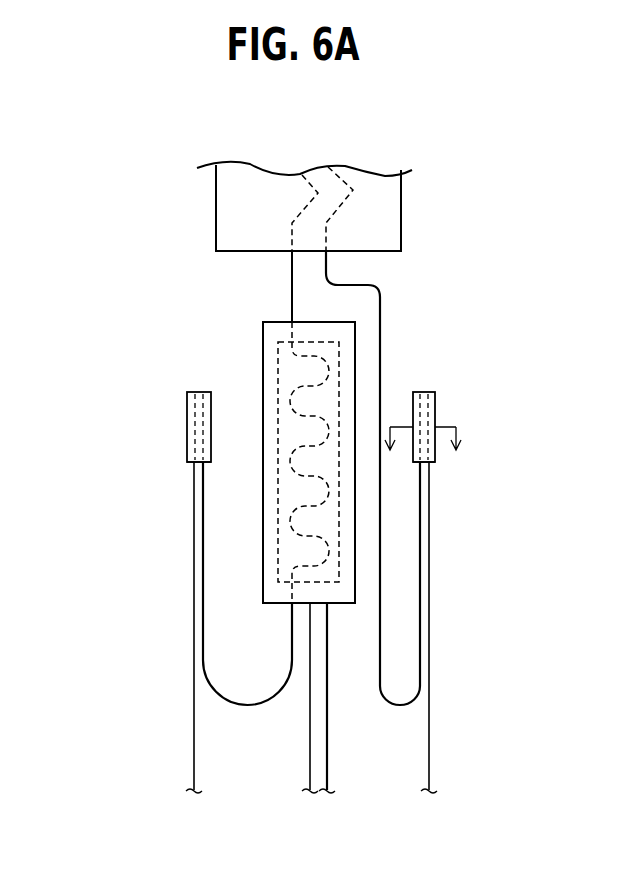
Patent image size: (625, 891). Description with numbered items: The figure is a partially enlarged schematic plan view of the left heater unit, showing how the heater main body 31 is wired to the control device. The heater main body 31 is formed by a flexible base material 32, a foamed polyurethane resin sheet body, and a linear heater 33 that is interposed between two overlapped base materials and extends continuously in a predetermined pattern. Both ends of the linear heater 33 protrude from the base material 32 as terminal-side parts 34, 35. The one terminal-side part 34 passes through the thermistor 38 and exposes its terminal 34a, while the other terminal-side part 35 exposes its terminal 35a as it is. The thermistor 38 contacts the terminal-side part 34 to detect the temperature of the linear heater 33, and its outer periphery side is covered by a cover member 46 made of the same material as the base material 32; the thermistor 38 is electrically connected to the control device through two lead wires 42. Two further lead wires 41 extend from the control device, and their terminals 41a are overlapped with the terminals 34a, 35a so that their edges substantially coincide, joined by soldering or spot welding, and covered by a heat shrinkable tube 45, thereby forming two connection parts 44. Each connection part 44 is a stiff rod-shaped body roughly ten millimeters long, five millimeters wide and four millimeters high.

The heater main body 31 is at (410, 192).
The base material 32 is at (383, 234).
The linear heater 33 is at (347, 187).
The terminal-side part 34 is at (292, 288).
The terminal-side part 35 is at (380, 326).
The terminal 34a is at (205, 424).
The terminal 35a is at (418, 427).
The thermistor 38 is at (272, 555).
The lead wire 41 is at (430, 682).
The terminal 41a is at (195, 436).
The lead wire 42 is at (330, 700).
The connection part 44 is at (185, 470).
The heat shrinkable tube 45 is at (187, 413).
The cover member 46 is at (353, 553).